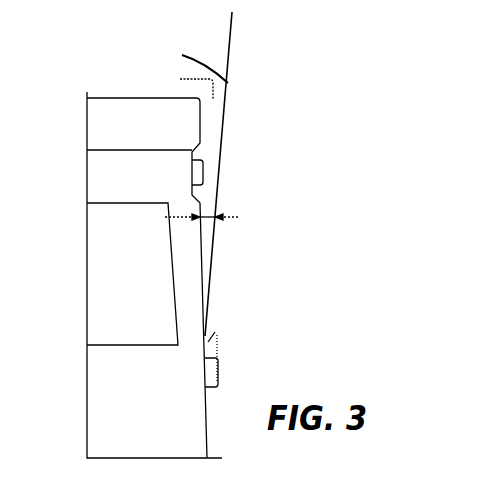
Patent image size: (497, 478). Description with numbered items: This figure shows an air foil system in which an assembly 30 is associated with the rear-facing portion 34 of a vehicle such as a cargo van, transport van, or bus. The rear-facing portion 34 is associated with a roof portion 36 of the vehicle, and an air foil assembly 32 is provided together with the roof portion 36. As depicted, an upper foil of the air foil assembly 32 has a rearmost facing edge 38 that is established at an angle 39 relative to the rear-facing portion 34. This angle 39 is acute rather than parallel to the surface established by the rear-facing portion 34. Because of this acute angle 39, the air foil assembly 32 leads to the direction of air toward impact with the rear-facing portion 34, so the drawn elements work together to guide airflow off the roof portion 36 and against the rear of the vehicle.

The assembly 30 is at (247, 107).
The air foil assembly 32 is at (203, 56).
The rear-facing portion 34 is at (201, 204).
The roof portion 36 is at (128, 96).
The rearmost facing edge 38 is at (229, 84).
The angle 39 is at (218, 221).